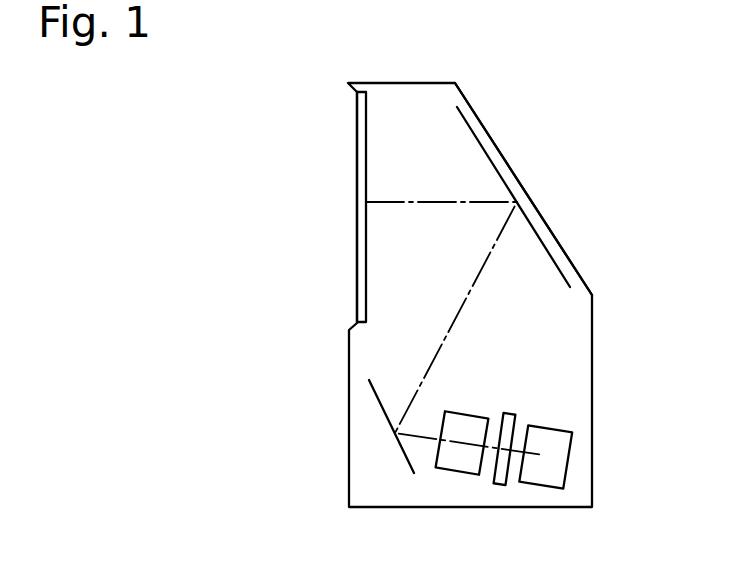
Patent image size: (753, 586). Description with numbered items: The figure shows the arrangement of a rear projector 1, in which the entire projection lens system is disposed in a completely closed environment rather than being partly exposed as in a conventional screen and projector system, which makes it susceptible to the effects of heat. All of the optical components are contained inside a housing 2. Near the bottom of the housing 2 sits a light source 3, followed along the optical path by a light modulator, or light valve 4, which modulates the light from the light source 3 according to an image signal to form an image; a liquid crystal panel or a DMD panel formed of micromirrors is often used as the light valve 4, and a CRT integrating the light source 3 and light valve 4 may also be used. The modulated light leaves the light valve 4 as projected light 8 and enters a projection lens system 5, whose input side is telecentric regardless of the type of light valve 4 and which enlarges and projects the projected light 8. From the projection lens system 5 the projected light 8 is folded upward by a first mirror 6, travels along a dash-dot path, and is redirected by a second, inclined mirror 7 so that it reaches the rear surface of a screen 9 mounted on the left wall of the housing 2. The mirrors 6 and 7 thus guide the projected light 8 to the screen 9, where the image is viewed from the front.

The rear projector 1 is at (518, 140).
The housing 2 is at (592, 392).
The light source 3 is at (540, 478).
The light modulator (light valve) 4 is at (497, 483).
The projection lens system 5 is at (452, 463).
The mirror 6 is at (404, 455).
The mirror 7 is at (538, 231).
The projected light 8 is at (447, 337).
The screen 9 is at (360, 183).